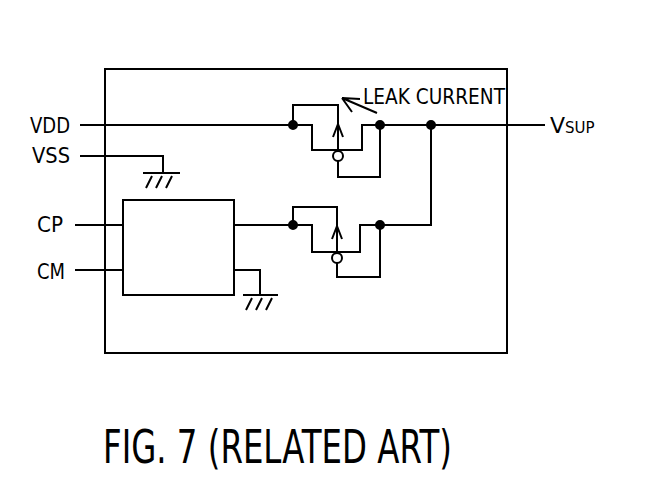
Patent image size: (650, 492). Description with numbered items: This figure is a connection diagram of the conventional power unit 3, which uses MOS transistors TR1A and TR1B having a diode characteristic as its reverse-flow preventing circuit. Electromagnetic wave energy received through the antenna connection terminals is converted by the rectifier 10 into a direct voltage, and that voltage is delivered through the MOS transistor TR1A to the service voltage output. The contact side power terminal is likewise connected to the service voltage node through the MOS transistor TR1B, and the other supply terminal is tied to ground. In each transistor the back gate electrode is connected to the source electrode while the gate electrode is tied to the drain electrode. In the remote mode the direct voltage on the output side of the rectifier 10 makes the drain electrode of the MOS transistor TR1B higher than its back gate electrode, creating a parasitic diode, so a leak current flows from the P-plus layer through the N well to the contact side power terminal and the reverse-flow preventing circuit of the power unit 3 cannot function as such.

The power unit 3 is at (407, 69).
The rectifier 10 is at (193, 200).
The MOS transistor TR1A is at (369, 295).
The MOS transistor TR1B is at (301, 150).